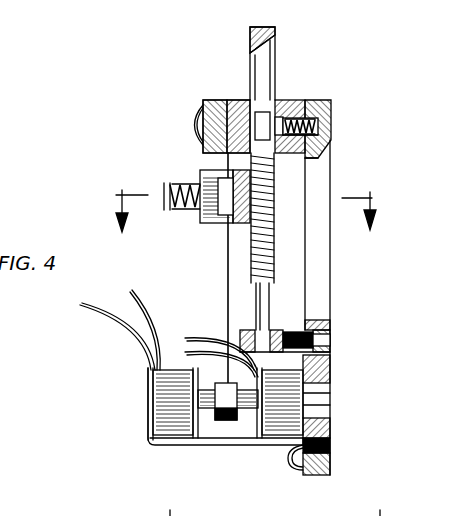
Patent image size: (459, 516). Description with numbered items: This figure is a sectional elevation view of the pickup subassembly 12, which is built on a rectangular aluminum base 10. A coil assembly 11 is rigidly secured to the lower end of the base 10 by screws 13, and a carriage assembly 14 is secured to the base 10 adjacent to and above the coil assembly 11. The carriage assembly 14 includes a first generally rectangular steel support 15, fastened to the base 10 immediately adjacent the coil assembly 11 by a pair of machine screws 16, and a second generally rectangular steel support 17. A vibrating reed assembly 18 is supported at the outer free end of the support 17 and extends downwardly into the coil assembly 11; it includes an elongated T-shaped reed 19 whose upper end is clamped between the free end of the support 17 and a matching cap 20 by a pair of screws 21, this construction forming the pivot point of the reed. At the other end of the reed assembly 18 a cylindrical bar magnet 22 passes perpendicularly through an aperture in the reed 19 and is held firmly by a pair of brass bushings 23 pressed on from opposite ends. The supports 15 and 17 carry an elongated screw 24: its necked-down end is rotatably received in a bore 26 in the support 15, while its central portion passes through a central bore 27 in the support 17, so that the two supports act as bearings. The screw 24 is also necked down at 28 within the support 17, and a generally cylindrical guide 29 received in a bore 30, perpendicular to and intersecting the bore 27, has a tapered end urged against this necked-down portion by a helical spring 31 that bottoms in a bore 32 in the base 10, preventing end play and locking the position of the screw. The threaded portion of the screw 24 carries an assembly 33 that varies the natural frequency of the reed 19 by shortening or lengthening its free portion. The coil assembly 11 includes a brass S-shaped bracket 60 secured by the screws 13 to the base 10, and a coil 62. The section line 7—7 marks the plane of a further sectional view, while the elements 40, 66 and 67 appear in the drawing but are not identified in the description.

The section line 7— 7 is at (245, 212).
The rectangular aluminum base 10 is at (324, 272).
The coil assembly 11 is at (160, 448).
The pickup subassembly 12 is at (98, 322).
The screws 13 is at (298, 452).
The carriage assembly 14 is at (190, 97).
The first generally rectangular steel support 15 is at (305, 338).
The machine screws 16 is at (330, 340).
The second generally rectangular steel support 17 is at (300, 102).
The vibrating reed assembly 18 is at (214, 274).
The elongated T-shaped reed 19 is at (226, 240).
The cap 20 is at (215, 100).
The screws 21 is at (188, 122).
The cylindrical bar magnet 22 is at (208, 412).
The brass bushings 23 is at (232, 420).
The elongated screw 24 is at (272, 66).
The bore 26 is at (295, 330).
The central bore 27 is at (285, 108).
The necked-down portion 28 is at (232, 100).
The generally cylindrical guide 29 is at (290, 150).
The bore 30 is at (322, 104).
The helical spring 31 is at (318, 126).
The bore 32 is at (310, 136).
The assembly 33 is at (168, 217).
The member 40 is at (371, 509).
The brass S-shaped bracket 60 is at (150, 405).
The coil 62 is at (290, 392).
The left spool 66 is at (165, 385).
The member 67 is at (160, 509).